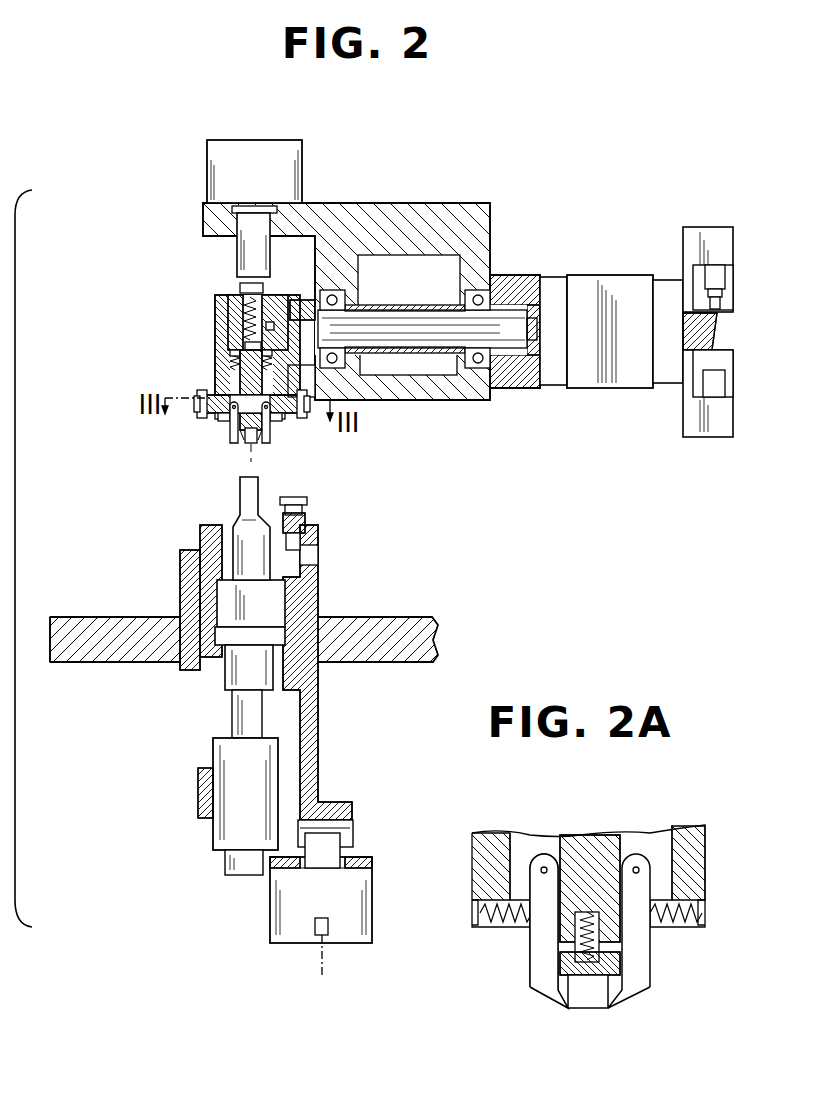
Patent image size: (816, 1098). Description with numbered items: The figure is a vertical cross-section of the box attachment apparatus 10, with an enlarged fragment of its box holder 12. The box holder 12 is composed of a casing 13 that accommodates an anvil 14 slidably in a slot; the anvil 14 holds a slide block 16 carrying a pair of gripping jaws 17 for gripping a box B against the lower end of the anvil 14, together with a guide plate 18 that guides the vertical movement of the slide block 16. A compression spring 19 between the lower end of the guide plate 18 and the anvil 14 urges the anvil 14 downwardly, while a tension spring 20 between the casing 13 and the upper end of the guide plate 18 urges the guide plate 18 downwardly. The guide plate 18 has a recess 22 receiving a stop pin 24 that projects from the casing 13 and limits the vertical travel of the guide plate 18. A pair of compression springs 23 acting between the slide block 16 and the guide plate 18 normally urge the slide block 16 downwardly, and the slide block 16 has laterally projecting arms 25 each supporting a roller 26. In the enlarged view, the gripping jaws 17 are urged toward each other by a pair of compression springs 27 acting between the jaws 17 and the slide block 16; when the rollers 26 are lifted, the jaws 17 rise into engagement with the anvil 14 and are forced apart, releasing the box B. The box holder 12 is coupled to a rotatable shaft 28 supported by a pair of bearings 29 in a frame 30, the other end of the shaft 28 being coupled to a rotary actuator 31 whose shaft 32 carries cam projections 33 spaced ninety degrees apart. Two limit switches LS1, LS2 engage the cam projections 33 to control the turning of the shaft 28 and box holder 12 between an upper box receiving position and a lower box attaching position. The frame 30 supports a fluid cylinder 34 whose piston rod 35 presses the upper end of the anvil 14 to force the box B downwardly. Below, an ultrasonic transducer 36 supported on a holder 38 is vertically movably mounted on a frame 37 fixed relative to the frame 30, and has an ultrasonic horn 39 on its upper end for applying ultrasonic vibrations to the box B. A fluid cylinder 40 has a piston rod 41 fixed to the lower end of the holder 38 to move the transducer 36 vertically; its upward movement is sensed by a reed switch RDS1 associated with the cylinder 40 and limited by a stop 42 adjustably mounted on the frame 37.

In FIG. 2, the box attachment apparatus 10 is at (152, 484).
In FIG. 2, the box holder 12 is at (208, 345).
In FIG. 2, the casing 13 is at (222, 334).
In FIG. 2, the anvil 14 is at (240, 288).
In FIG. 2A, the anvil 14 is at (612, 985).
In FIG. 2, the slide block 16 is at (212, 418).
In FIG. 2A, the slide block 16 is at (702, 862).
In FIG. 2, the gripping jaws 17 is at (235, 442).
In FIG. 2A, the gripping jaws 17 is at (538, 950).
In FIG. 2, the guide plate 18 is at (245, 385).
In FIG. 2A, the guide plate 18 is at (593, 838).
In FIG. 2A, the compression spring 19 is at (560, 985).
In FIG. 2, the tension spring 20 is at (228, 322).
In FIG. 2, the recess 22 is at (275, 322).
In FIG. 2, the compression springs 23 is at (232, 366).
In FIG. 2, the stop pin 24 is at (273, 300).
In FIG. 2, the arms 25 is at (270, 430).
In FIG. 2, the rollers 26 is at (200, 410).
In FIG. 2, the compression springs 27 is at (222, 425).
In FIG. 2A, the compression springs 27 is at (490, 912).
In FIG. 2, the rotatable shaft 28 is at (432, 348).
In FIG. 2, the bearings 29 is at (480, 296).
In FIG. 2, the frame 30 is at (453, 208).
In FIG. 2, the rotary actuator 31 is at (583, 377).
In FIG. 2, the shaft 32 is at (703, 327).
In FIG. 2, the cam projections 33 is at (713, 353).
In FIG. 2, the fluid cylinder 34 is at (277, 147).
In FIG. 2, the piston rod 35 is at (248, 232).
In FIG. 2, the ultrasonic transducer 36 is at (220, 688).
In FIG. 2, the frame 37 is at (116, 625).
In FIG. 2, the holder 38 is at (290, 722).
In FIG. 2, the ultrasonic horn 39 is at (248, 500).
In FIG. 2, the fluid cylinder 40 is at (280, 900).
In FIG. 2, the piston rod 41 is at (327, 848).
In FIG. 2, the stop 42 is at (306, 495).
In FIG. 2, the box B is at (267, 462).
In FIG. 2A, the box B is at (588, 1008).
In FIG. 2, the limit switch LS1 is at (717, 387).
In FIG. 2, the limit switch LS2 is at (722, 270).
In FIG. 2, the reed switch RDS1 is at (322, 997).